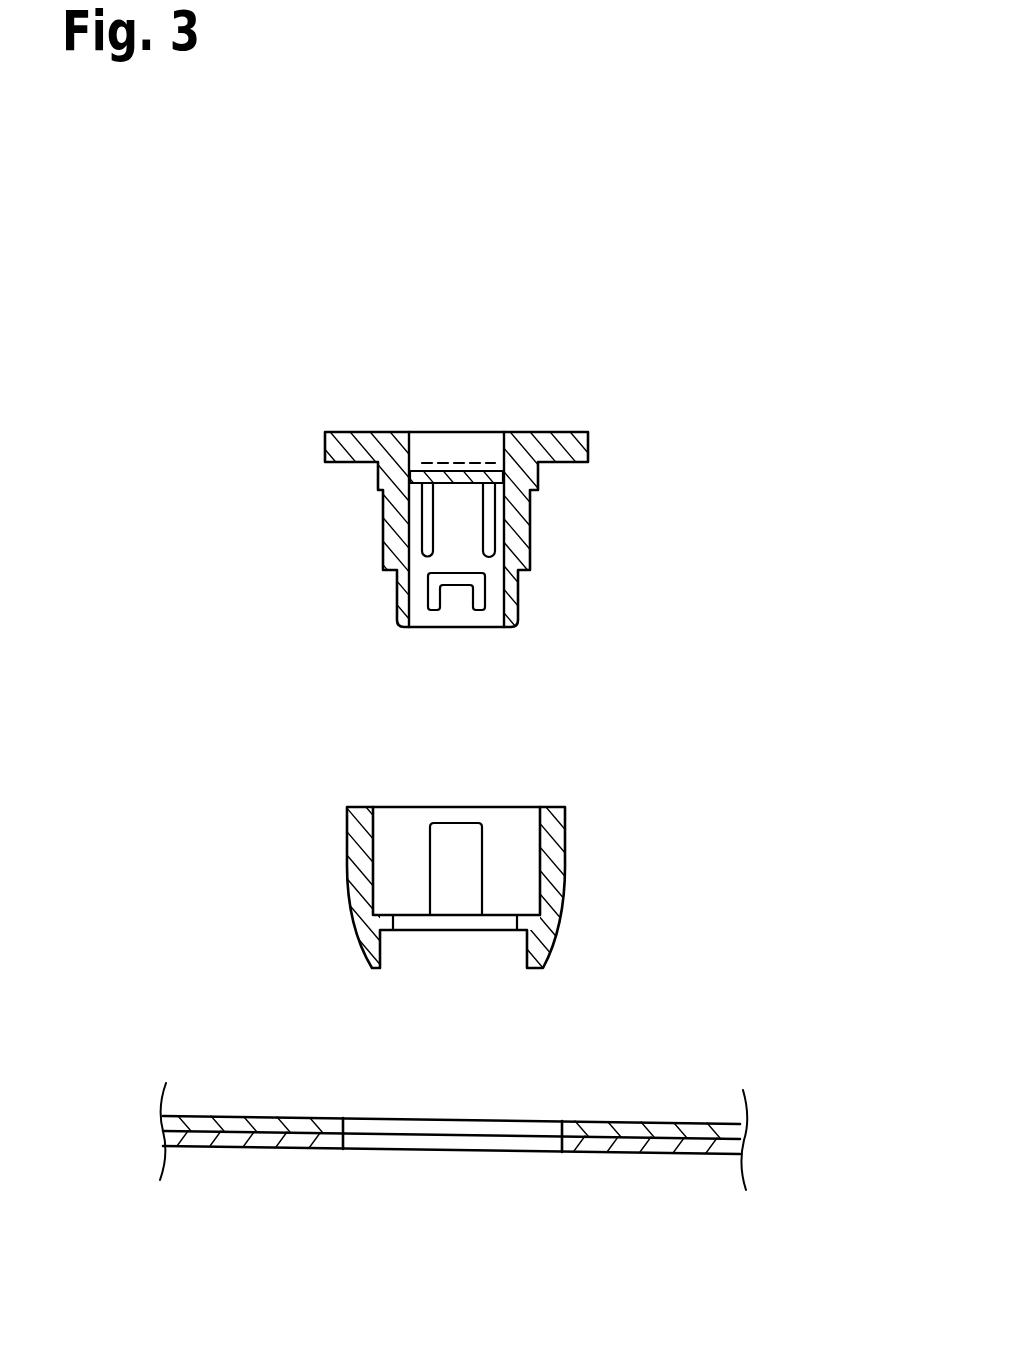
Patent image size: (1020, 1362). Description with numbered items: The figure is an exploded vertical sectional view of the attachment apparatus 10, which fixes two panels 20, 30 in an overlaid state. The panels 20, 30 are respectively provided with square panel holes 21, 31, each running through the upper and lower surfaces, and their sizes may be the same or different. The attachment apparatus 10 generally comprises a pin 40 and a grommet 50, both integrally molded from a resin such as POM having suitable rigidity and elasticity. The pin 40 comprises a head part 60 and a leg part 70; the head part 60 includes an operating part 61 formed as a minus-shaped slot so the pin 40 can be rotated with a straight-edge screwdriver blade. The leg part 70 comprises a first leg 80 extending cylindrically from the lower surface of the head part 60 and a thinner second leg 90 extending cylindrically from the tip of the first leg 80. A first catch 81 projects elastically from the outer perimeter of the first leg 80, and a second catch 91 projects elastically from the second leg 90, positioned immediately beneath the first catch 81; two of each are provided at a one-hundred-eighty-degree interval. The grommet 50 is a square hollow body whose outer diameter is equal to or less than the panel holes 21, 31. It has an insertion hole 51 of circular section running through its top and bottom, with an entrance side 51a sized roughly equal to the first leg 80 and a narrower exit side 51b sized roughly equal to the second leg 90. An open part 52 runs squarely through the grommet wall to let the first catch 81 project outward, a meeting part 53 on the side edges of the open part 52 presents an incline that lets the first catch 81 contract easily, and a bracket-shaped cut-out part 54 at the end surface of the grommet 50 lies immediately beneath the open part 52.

The attachment apparatus 10 is at (188, 224).
The panel 20 is at (652, 1120).
The panel hole 21 is at (520, 1125).
The panel 30 is at (680, 1155).
The panel hole 31 is at (457, 1143).
The pin 40 is at (283, 373).
The grommet 50 is at (300, 747).
The insertion hole 51 is at (393, 820).
The entrance side 51a is at (505, 817).
The exit side 51b is at (495, 925).
The open part 52 is at (463, 852).
The meeting part 53 is at (428, 873).
The cut-out part 54 is at (413, 940).
The head part 60 is at (590, 447).
The operating part 61 is at (458, 448).
The leg part 70 is at (689, 532).
The first leg 80 is at (530, 532).
The first catch 81 is at (443, 517).
The second leg 90 is at (518, 597).
The second catch 91 is at (457, 597).